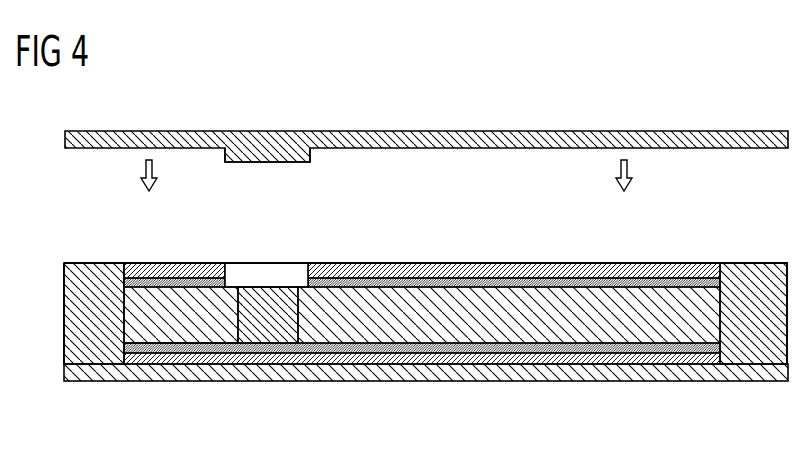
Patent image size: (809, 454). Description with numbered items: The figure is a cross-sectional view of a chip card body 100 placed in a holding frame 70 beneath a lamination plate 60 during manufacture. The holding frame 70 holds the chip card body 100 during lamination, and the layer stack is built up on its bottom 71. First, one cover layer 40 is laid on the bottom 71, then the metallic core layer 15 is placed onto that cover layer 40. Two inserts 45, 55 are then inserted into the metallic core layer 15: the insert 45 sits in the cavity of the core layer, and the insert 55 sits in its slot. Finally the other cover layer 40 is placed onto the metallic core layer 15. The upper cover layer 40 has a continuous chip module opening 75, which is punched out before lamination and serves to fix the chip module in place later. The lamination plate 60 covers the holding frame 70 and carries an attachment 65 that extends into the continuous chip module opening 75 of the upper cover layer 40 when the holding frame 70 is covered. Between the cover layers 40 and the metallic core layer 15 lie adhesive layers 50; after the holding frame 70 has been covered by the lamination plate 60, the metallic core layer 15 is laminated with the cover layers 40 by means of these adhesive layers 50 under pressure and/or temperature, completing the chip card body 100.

The chip card body 100 is at (680, 252).
The lamination plate 60 is at (614, 133).
The attachment 65 is at (263, 163).
The holding frame 70 is at (64, 290).
The bottom 71 is at (187, 375).
The cover layer 40 is at (513, 270).
The adhesive layer 50 is at (622, 282).
The continuous chip module opening 75 is at (292, 270).
The metallic core layer 15 is at (705, 335).
The insert 45 is at (270, 298).
The insert 55 is at (143, 335).